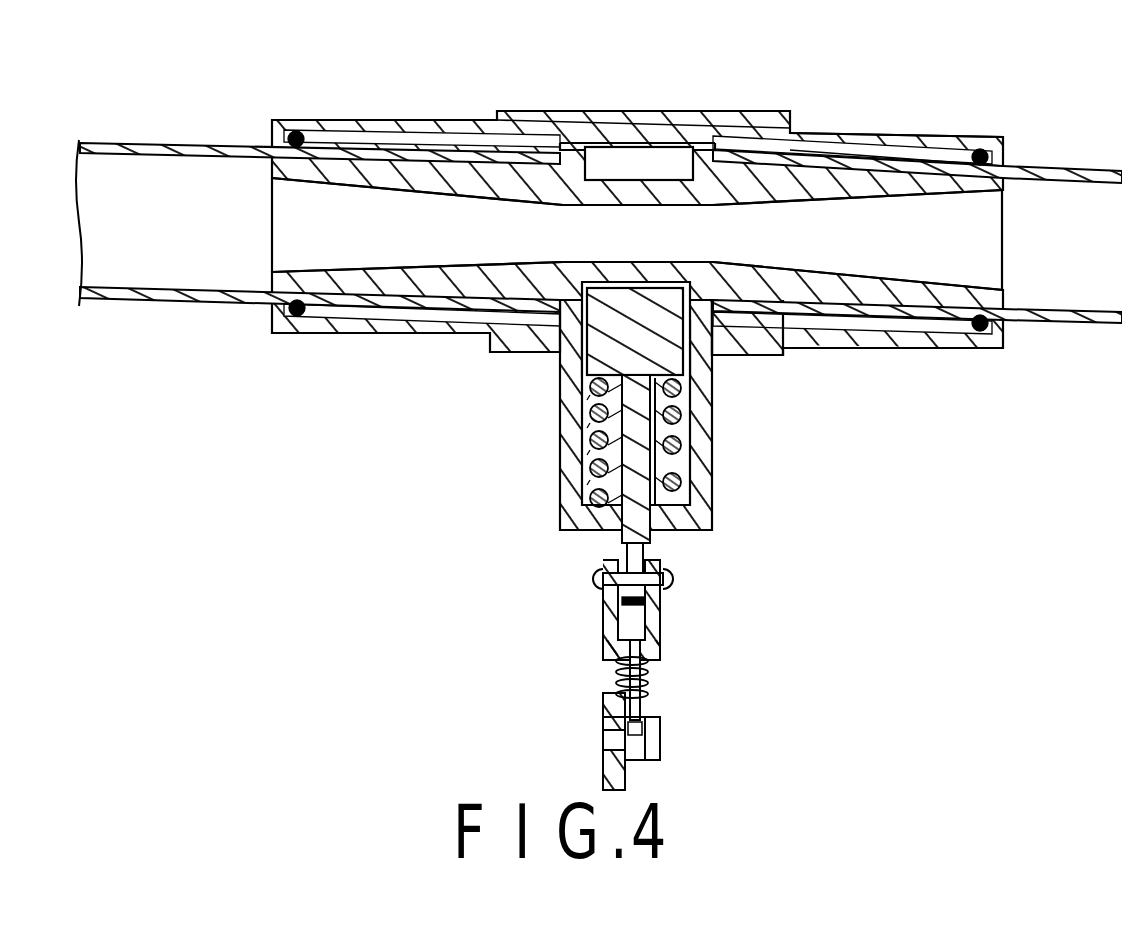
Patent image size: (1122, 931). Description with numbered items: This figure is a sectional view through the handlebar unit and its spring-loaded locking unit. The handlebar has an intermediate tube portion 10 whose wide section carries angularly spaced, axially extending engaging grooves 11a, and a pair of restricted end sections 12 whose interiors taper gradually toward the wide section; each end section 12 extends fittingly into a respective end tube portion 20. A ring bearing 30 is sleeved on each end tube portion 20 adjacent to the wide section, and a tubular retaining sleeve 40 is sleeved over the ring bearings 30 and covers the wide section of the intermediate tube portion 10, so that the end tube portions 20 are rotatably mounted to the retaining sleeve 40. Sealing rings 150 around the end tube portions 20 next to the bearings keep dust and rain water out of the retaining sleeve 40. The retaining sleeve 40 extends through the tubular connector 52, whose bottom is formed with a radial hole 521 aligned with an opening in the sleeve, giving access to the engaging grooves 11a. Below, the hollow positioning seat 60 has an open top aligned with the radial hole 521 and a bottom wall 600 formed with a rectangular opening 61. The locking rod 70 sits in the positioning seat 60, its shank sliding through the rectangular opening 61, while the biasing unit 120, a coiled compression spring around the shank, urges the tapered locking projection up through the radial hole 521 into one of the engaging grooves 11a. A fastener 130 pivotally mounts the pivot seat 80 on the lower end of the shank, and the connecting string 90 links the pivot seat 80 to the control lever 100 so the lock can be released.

The intermediate tube portion 10 is at (1012, 306).
The engaging grooves 11a is at (612, 165).
The restricted end sections 12 is at (380, 170).
The end tube portions 20 is at (1066, 162).
The ring bearings 30 is at (870, 152).
The tubular retaining sleeve 40 is at (937, 128).
The tubular connector 52 is at (775, 358).
The radial hole 521 is at (716, 356).
The positioning seat 60 is at (557, 424).
The bottom wall 600 is at (600, 520).
The rectangular opening 61 is at (665, 535).
The locking rod 70 is at (603, 358).
The pivot seat 80 is at (600, 635).
The connecting string 90 is at (653, 693).
The control lever 100 is at (597, 772).
The biasing unit 120 is at (694, 455).
The fastener 130 is at (595, 583).
The sealing rings 150 is at (297, 314).